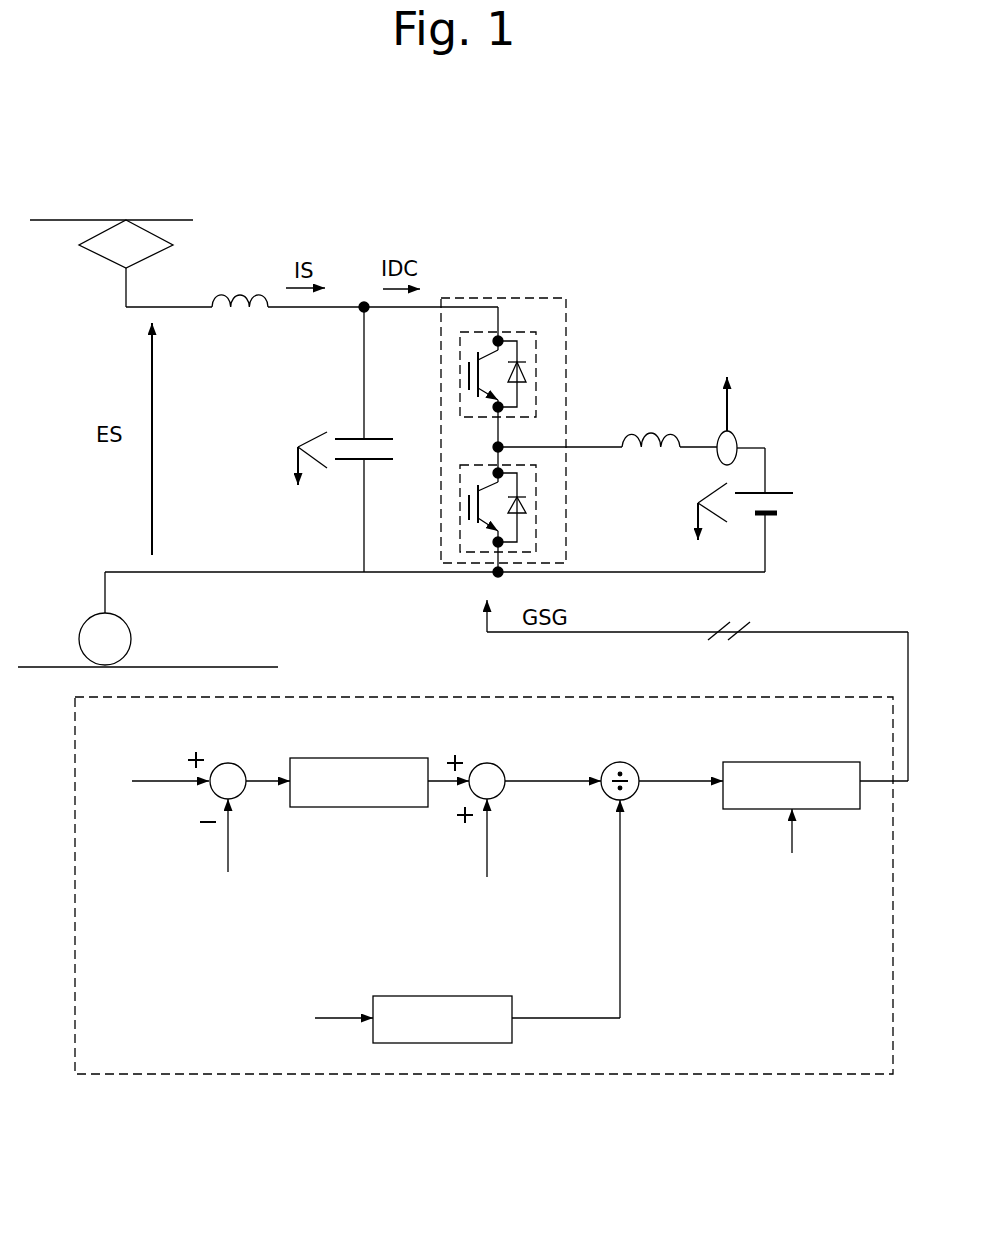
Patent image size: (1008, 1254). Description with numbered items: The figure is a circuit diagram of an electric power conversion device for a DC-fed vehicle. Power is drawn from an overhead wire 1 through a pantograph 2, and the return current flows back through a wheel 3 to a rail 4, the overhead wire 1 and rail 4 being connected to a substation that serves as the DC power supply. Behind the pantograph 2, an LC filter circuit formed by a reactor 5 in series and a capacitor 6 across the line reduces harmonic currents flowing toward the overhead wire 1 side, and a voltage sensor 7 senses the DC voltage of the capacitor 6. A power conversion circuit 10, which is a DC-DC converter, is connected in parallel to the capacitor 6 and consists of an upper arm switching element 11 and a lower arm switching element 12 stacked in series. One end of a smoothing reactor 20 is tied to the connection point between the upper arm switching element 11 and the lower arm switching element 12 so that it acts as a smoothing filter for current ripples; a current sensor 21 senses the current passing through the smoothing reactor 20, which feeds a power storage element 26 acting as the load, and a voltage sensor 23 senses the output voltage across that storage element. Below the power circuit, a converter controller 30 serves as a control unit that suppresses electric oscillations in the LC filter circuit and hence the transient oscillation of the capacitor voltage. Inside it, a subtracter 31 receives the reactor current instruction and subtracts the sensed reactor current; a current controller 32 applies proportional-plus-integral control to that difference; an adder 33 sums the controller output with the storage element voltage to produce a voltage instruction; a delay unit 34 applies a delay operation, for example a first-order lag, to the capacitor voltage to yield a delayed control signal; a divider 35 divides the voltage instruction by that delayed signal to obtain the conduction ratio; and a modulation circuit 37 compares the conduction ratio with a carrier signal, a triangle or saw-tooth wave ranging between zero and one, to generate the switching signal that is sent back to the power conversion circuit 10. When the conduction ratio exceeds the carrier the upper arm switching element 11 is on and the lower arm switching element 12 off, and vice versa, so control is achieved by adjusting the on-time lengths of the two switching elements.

The overhead wire 1 is at (190, 220).
The pantograph 2 is at (99, 253).
The wheel 3 is at (132, 641).
The rail 4 is at (250, 660).
The reactor 5 is at (243, 313).
The capacitor 6 is at (388, 430).
The voltage sensor 7 is at (292, 449).
The power conversion circuit 10 is at (543, 411).
The upper arm switching element 11 is at (527, 331).
The lower arm switching element 12 is at (527, 464).
The smoothing reactor 20 is at (630, 425).
The current sensor 21 is at (718, 437).
The voltage sensor 23 is at (697, 505).
The power storage element 26 is at (787, 503).
The converter controller 30 is at (425, 696).
The subtracter 31 is at (228, 762).
The current controller 32 is at (365, 757).
The adder 33 is at (487, 762).
The delay unit 34 is at (455, 995).
The divider 35 is at (620, 762).
The modulation circuit 37 is at (800, 761).